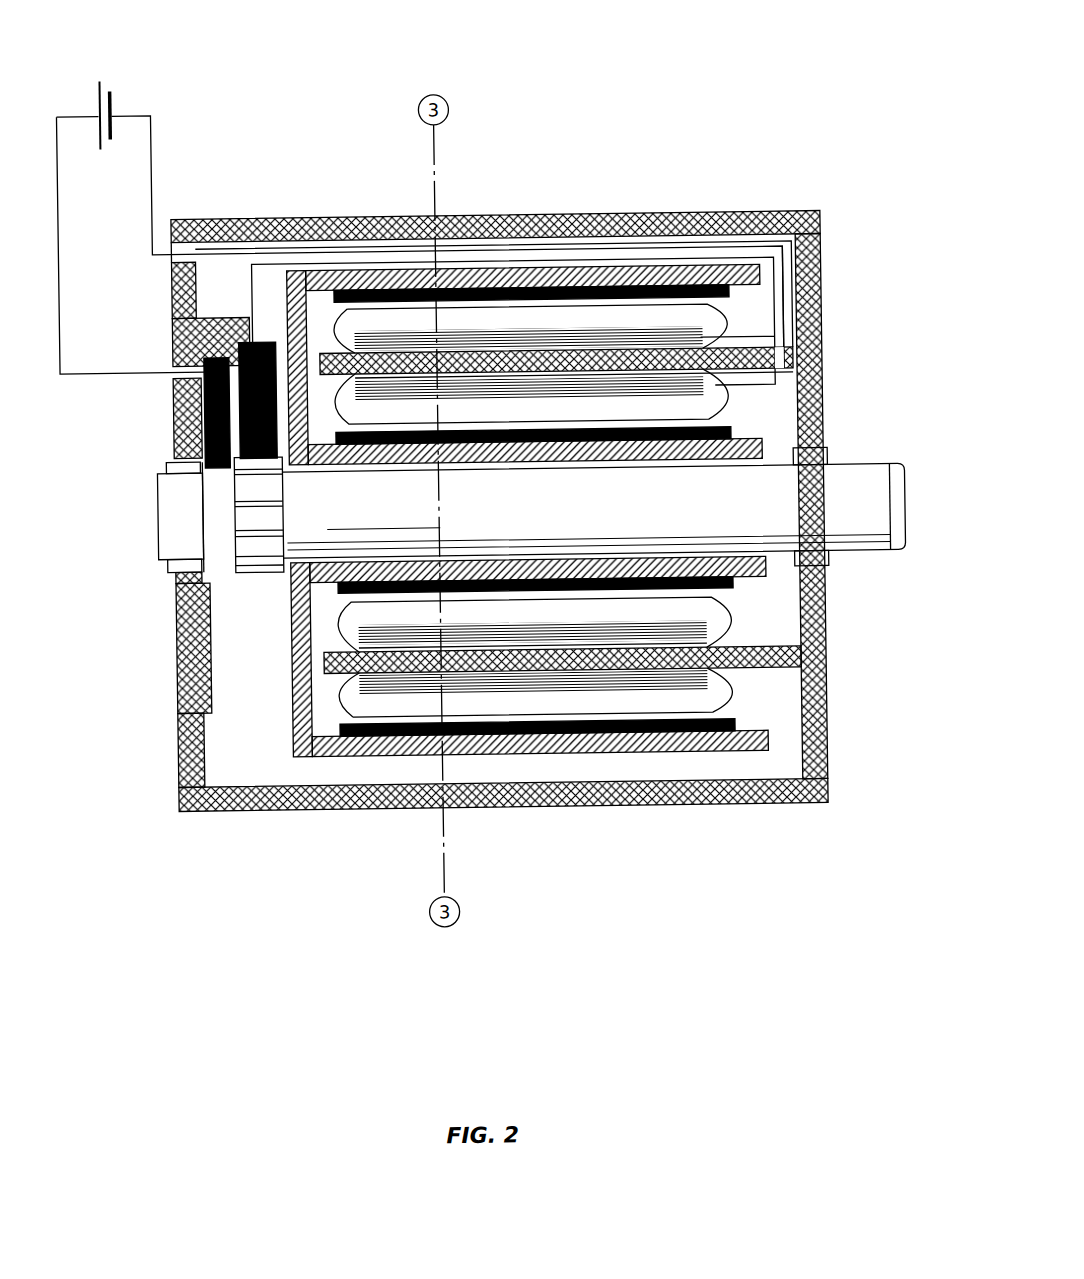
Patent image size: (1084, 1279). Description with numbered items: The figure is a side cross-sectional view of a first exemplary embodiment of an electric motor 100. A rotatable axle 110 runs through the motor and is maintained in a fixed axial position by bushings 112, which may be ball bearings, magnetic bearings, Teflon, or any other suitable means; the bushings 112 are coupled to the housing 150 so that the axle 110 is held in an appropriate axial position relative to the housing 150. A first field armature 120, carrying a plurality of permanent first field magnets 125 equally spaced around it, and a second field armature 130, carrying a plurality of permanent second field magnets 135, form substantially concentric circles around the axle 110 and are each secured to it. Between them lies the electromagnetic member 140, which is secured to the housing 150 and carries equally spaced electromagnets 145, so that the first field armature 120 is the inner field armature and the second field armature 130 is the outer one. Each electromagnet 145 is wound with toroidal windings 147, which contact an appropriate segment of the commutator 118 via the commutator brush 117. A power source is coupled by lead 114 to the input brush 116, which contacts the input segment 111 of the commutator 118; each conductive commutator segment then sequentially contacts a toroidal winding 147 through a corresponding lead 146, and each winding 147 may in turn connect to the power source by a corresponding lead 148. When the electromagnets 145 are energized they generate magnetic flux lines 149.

The electric motor 100 is at (268, 46).
The rotatable axle 110 is at (839, 466).
The input segment 111 is at (200, 512).
The bushings 112 is at (166, 460).
The lead 114 is at (137, 368).
The input brush 116 is at (227, 352).
The commutator brush 117 is at (264, 337).
The commutator 118 is at (232, 546).
The first field armature 120 is at (771, 438).
The first field magnets 125 is at (737, 427).
The second field armature 130 is at (767, 277).
The second field magnets 135 is at (736, 296).
The electromagnetic member 140 is at (764, 647).
The electromagnets 145 is at (727, 708).
The lead 146 is at (554, 248).
The toroidal windings 147 is at (717, 679).
The lead 148 is at (668, 243).
The magnetic flux lines 149 is at (646, 774).
The housing 150 is at (470, 212).